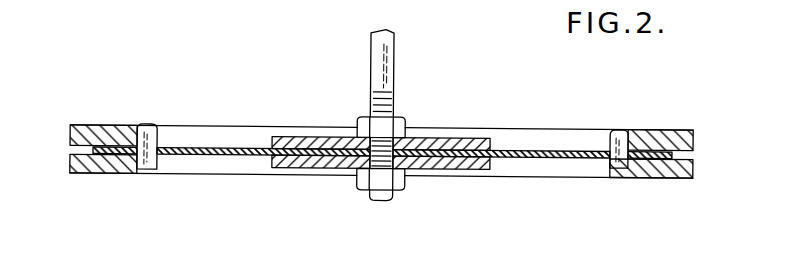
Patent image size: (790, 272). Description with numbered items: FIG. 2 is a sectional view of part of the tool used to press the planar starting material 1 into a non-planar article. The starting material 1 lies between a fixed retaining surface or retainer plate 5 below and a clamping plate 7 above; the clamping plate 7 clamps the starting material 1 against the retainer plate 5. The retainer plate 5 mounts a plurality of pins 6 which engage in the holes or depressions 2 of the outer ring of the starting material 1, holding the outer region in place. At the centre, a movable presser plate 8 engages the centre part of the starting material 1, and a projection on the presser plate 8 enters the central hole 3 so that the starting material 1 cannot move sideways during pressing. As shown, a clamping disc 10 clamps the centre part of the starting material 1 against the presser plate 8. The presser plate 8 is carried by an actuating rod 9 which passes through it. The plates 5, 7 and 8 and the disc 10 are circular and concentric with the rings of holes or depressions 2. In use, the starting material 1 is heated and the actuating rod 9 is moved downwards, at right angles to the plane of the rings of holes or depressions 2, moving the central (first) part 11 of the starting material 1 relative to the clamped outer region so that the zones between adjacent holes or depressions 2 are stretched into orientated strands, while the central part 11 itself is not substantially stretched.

The starting material 1 is at (246, 141).
The holes or depressions 2 is at (233, 155).
The central hole 3 is at (413, 140).
The retainer plate 5 is at (117, 172).
The pins 6 is at (145, 141).
The clamping plate 7 is at (108, 131).
The presser plate 8 is at (461, 141).
The actuating rod 9 is at (386, 53).
The clamping disc 10 is at (461, 168).
The central (first) part 11 is at (326, 140).